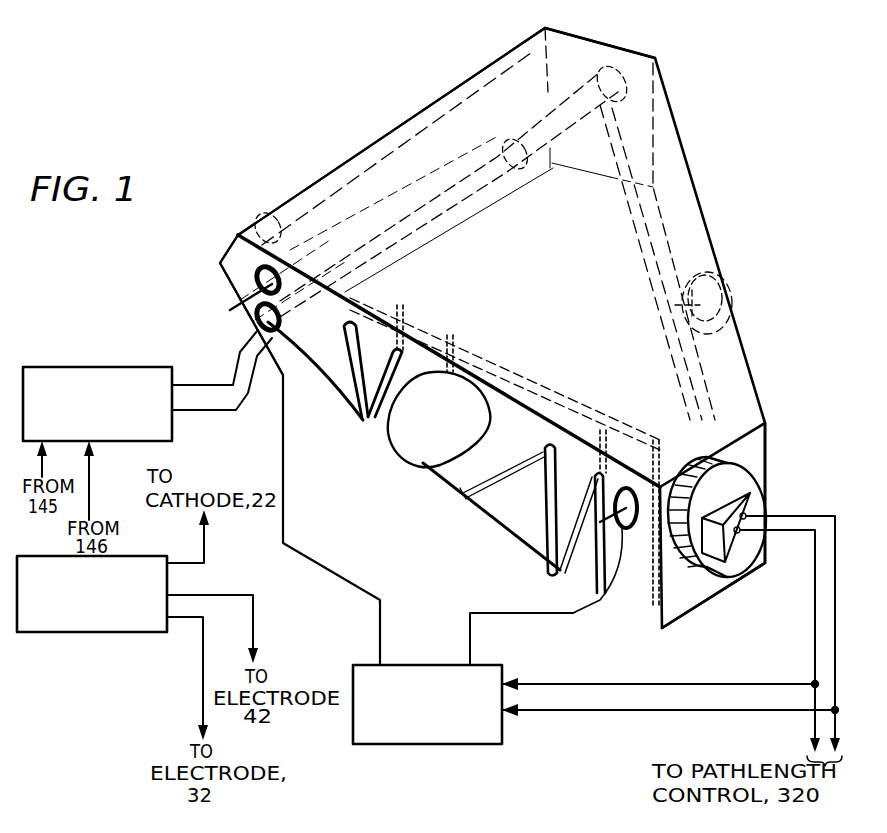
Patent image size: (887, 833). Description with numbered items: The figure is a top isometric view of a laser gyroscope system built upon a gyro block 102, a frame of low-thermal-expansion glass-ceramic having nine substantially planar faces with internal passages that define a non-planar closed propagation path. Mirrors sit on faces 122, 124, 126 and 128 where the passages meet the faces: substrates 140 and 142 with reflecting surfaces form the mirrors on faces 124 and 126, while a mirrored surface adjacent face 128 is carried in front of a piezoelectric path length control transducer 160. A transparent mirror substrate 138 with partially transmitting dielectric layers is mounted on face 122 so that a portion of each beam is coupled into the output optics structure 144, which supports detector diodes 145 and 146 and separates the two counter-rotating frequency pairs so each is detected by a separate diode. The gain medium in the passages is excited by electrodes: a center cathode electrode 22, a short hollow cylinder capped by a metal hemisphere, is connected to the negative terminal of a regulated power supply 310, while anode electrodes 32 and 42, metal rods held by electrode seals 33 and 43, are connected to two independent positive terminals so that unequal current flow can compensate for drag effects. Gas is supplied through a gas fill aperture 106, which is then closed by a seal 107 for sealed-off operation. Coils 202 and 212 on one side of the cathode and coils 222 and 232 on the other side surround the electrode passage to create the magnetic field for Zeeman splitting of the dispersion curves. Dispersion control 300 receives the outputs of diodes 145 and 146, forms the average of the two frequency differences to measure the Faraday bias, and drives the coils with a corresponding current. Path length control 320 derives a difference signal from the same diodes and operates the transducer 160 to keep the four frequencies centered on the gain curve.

The gyro block 102 is at (692, 155).
The face 124 is at (577, 47).
The face 126 is at (338, 170).
The face 122 is at (760, 447).
The substrate 140 is at (630, 60).
The substrate 142 is at (260, 215).
The seal 107 is at (725, 275).
The gas fill aperture 106 is at (733, 341).
The electrode seal 43 is at (282, 300).
The anode electrode 42 is at (230, 310).
The piezoelectric transducer 160 is at (258, 333).
The face 128 is at (290, 355).
The center cathode electrode 22 is at (477, 432).
The coil 202 is at (347, 408).
The coil 212 is at (383, 417).
The coil 222 is at (545, 535).
The coil 232 is at (577, 588).
The anode electrode 32 is at (617, 530).
The electrode seal 33 is at (633, 528).
The transparent mirror substrate 138 is at (747, 477).
The output optics structure 144 is at (713, 548).
The detector diode 145 is at (737, 534).
The detector diode 146 is at (746, 512).
The path length control 320 is at (100, 367).
The power supply 310 is at (108, 632).
The dispersion control 300 is at (428, 744).